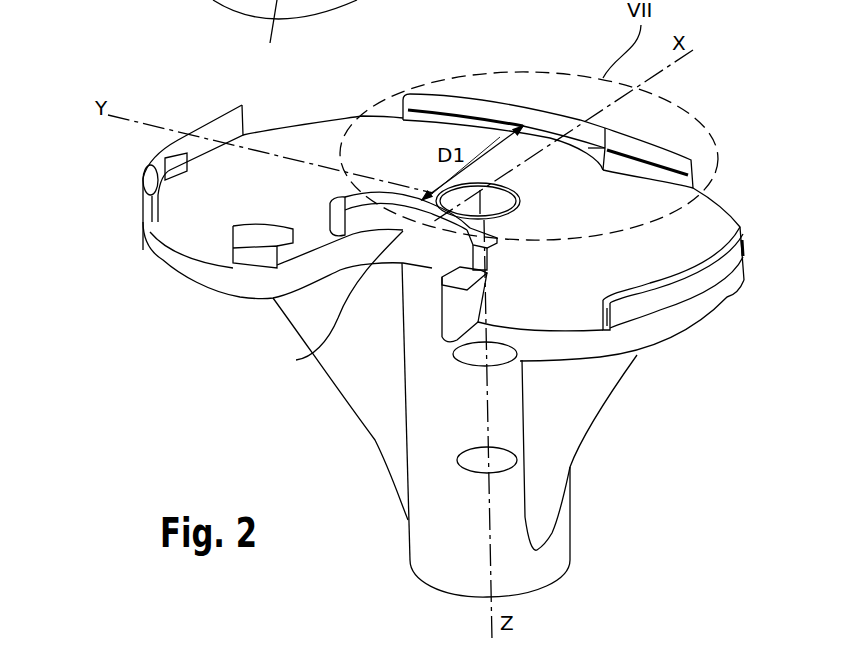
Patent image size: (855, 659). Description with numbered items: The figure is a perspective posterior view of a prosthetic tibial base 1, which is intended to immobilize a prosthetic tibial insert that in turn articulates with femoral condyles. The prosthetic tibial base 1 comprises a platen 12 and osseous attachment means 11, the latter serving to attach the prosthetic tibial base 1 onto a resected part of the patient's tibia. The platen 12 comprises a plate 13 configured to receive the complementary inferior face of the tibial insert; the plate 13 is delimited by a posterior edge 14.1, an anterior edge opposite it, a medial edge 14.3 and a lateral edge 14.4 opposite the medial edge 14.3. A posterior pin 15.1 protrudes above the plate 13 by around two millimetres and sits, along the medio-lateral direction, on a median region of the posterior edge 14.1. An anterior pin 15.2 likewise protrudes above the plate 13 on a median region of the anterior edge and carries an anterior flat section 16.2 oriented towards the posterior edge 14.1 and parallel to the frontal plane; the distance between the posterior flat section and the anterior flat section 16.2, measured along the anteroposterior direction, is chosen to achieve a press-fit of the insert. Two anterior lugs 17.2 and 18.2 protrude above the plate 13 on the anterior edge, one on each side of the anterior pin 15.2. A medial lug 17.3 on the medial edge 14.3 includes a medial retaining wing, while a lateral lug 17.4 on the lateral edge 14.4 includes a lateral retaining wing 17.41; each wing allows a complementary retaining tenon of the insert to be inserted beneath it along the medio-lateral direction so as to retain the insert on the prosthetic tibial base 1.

The prosthetic tibial base 1 is at (188, 412).
The osseous attachment means 11 is at (510, 427).
The platen 12 is at (160, 250).
The plate 13 is at (706, 225).
The posterior edge 14.1 is at (384, 100).
The medial edge 14.3 is at (690, 340).
The lateral edge 14.4 is at (131, 204).
The posterior pin 15.1 is at (296, 360).
The anterior pin 15.2 is at (546, 108).
The anterior flat section 16.2 is at (587, 158).
The anterior lug 17.2 is at (657, 150).
The medial lug 17.3 is at (723, 285).
The lateral lug 17.4 is at (203, 123).
The lateral retaining wing 17.41 is at (143, 166).
The anterior lug 18.2 is at (463, 105).